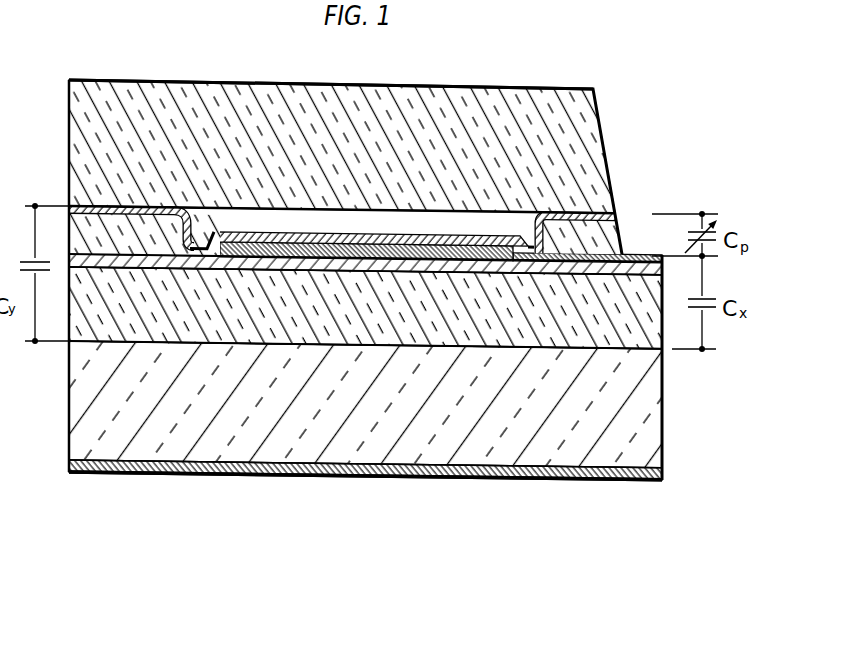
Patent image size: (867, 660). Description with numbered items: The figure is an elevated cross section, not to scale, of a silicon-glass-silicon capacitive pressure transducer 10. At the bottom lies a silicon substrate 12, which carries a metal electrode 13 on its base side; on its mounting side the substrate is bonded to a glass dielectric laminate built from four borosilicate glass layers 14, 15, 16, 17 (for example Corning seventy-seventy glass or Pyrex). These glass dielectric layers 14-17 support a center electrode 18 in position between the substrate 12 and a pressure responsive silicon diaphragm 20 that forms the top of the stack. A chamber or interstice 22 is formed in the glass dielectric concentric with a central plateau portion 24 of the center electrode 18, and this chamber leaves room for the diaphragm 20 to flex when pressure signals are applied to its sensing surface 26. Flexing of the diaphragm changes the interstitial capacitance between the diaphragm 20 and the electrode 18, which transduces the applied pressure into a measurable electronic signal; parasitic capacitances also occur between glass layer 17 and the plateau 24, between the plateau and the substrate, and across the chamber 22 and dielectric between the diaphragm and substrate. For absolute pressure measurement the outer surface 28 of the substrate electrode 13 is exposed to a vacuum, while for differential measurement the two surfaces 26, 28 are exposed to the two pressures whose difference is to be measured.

The capacitive pressure transducer 10 is at (365, 240).
The silicon substrate 12 is at (78, 400).
The metal electrode 13 is at (76, 466).
The glass dielectric layer 14 is at (80, 293).
The glass dielectric layer 15 is at (67, 258).
The glass dielectric layer 16 is at (158, 245).
The glass dielectric layer 17 is at (67, 203).
The center electrode 18 is at (650, 256).
The silicon diaphragm 20 is at (456, 93).
The chamber 22 is at (370, 231).
The central plateau portion 24 is at (402, 244).
The sensing surface 26 is at (331, 66).
The outer surface 28 is at (365, 507).